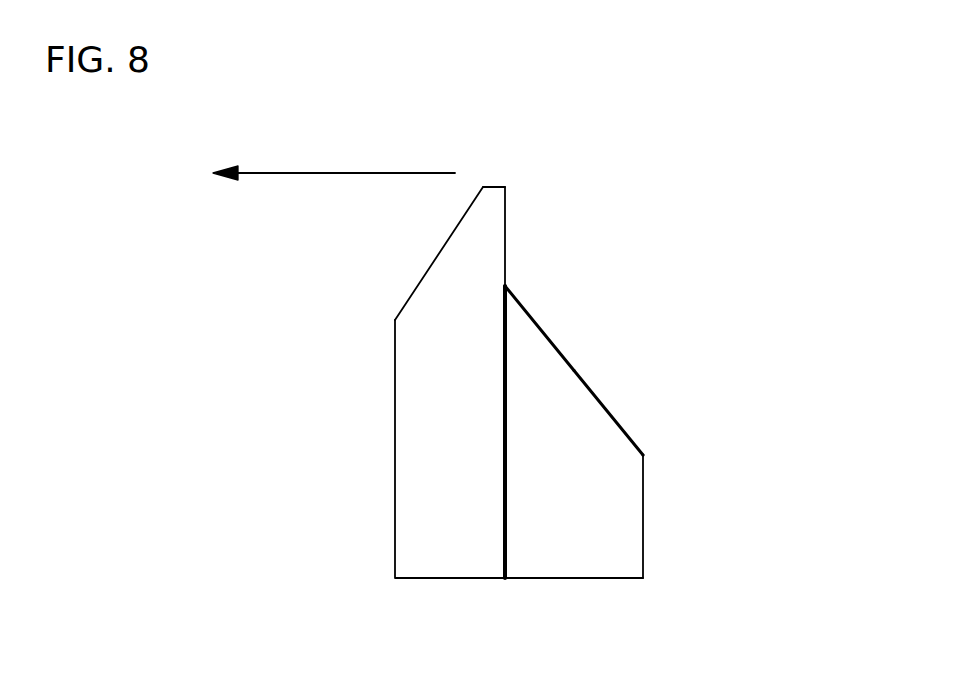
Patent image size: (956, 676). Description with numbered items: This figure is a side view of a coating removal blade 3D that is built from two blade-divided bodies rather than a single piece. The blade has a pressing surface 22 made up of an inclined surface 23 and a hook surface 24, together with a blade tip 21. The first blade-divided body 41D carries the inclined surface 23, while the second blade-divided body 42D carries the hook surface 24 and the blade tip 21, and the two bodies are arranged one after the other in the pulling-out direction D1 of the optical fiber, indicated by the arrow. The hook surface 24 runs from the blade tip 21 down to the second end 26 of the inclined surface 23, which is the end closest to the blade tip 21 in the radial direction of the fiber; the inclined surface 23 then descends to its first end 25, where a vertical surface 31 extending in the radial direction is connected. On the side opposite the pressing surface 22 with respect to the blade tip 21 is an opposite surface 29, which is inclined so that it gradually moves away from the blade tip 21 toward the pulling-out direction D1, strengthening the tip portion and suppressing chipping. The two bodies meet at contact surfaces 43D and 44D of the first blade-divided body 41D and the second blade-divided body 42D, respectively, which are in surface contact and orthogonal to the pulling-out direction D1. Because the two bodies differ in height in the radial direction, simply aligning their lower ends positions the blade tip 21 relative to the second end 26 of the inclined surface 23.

The coating removal blade 3D is at (350, 541).
The blade tip 21 is at (496, 187).
The pressing surface 22 is at (542, 323).
The inclined surface 23 is at (584, 378).
The hook surface 24 is at (506, 237).
The first end 25 is at (643, 455).
The second end 26 is at (506, 286).
The opposite surface 29 is at (443, 247).
The vertical surface 31 is at (643, 491).
The first blade-divided body 41D is at (574, 560).
The second blade-divided body 42D is at (455, 560).
The contact surface 43D is at (506, 432).
The contact surface 44D is at (506, 517).
The pulling-out direction D1 is at (277, 173).